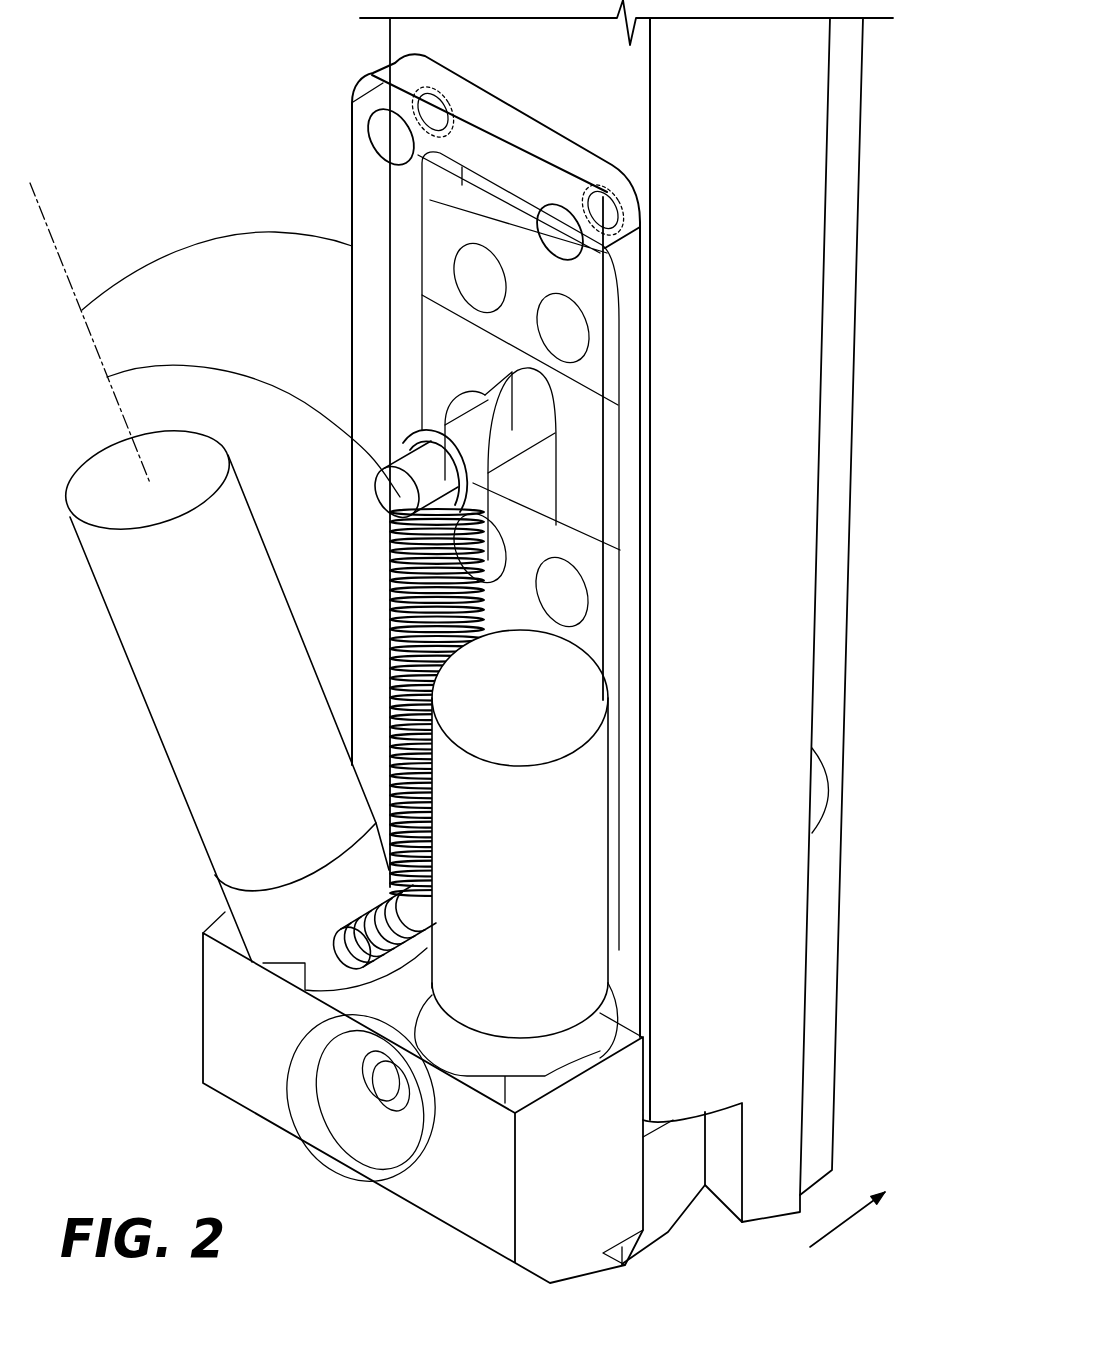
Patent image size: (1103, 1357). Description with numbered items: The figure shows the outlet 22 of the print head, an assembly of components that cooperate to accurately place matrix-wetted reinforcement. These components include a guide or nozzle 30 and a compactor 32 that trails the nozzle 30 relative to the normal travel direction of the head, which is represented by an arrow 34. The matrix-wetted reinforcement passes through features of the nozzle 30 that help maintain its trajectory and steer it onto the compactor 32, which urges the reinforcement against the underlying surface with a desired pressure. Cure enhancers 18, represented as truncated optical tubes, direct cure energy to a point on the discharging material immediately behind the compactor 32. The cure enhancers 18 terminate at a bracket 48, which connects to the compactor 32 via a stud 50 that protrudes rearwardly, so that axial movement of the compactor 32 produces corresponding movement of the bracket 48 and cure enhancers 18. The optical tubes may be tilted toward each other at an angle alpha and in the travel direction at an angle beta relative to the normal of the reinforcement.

The cure enhancer 18 is at (254, 743).
The outlet 22 is at (230, 203).
The nozzle 30 is at (740, 926).
The compactor 32 is at (668, 1233).
The arrow 34 is at (838, 1225).
The bracket 48 is at (472, 1191).
The stud 50 is at (384, 1076).